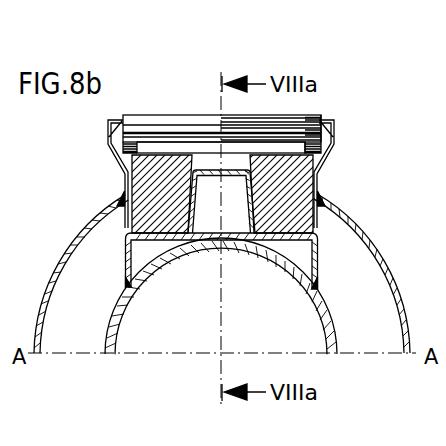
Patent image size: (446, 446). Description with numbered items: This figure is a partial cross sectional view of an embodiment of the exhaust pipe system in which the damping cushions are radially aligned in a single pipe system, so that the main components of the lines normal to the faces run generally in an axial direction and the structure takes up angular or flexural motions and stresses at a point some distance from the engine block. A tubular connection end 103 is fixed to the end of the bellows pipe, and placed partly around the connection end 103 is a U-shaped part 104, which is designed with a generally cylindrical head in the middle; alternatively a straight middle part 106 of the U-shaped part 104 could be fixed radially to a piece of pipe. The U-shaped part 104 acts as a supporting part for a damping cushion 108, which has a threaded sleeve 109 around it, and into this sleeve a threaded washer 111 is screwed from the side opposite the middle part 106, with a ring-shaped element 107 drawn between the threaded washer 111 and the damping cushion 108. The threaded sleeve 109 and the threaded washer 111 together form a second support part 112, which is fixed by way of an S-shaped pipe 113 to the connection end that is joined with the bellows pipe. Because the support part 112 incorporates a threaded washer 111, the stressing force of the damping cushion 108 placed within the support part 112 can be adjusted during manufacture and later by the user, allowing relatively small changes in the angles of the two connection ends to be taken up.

The tubular connection end 103 is at (110, 334).
The U-shaped part 104 is at (320, 243).
The middle part 106 is at (121, 208).
The ring disc 107 is at (265, 150).
The damping cushion 108 is at (303, 170).
The threaded sleeve 109 is at (108, 140).
The threaded washer 111 is at (178, 128).
The second support part 112 is at (253, 110).
The S-shaped pipe 113 is at (60, 263).